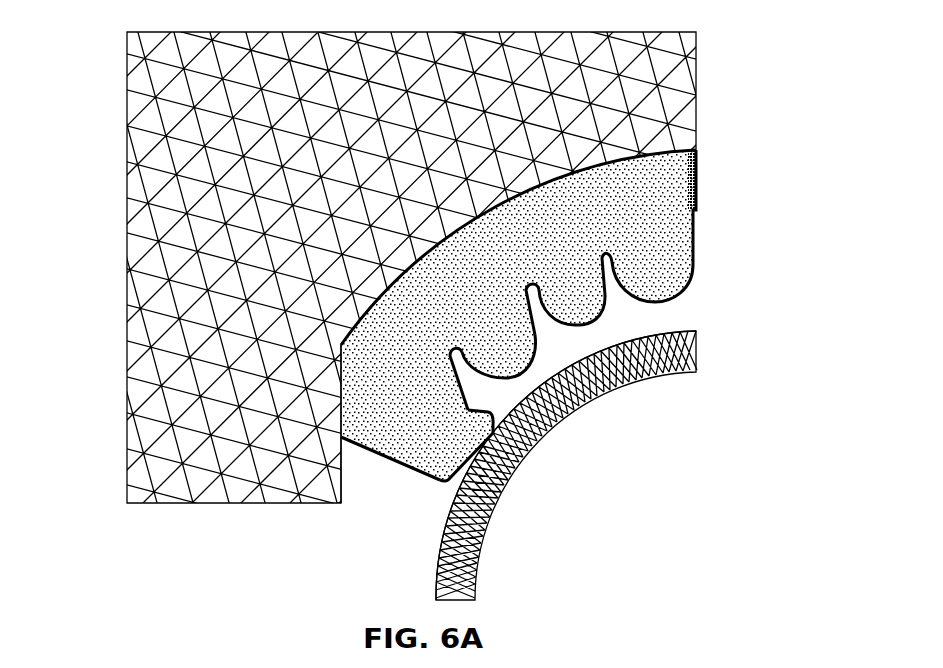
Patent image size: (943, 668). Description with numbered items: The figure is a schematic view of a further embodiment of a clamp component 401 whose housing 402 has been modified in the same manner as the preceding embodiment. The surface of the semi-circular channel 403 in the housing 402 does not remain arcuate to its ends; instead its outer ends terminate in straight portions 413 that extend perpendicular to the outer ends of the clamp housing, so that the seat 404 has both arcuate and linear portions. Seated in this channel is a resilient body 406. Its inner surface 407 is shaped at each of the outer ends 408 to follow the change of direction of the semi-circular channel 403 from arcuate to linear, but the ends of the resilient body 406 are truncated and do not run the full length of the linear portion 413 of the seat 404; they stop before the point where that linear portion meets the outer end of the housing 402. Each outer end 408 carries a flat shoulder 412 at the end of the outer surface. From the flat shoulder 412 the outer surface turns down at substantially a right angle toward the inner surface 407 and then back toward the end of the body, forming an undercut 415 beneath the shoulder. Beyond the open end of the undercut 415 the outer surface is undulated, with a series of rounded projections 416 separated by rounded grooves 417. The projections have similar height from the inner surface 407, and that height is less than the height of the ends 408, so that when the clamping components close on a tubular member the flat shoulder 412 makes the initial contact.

The clamp component 401 is at (423, 310).
The housing 402 is at (416, 294).
The semi-circular channel 403 is at (429, 353).
The seat 404 is at (377, 292).
The resilient body 406 is at (690, 183).
The inner surface 407 is at (345, 327).
The outer ends 408 is at (430, 473).
The flat shoulder 412 is at (490, 520).
The straight portions 413 is at (340, 478).
The undercut 415 is at (473, 407).
The rounded projections 416 is at (673, 287).
The rounded grooves 417 is at (618, 288).